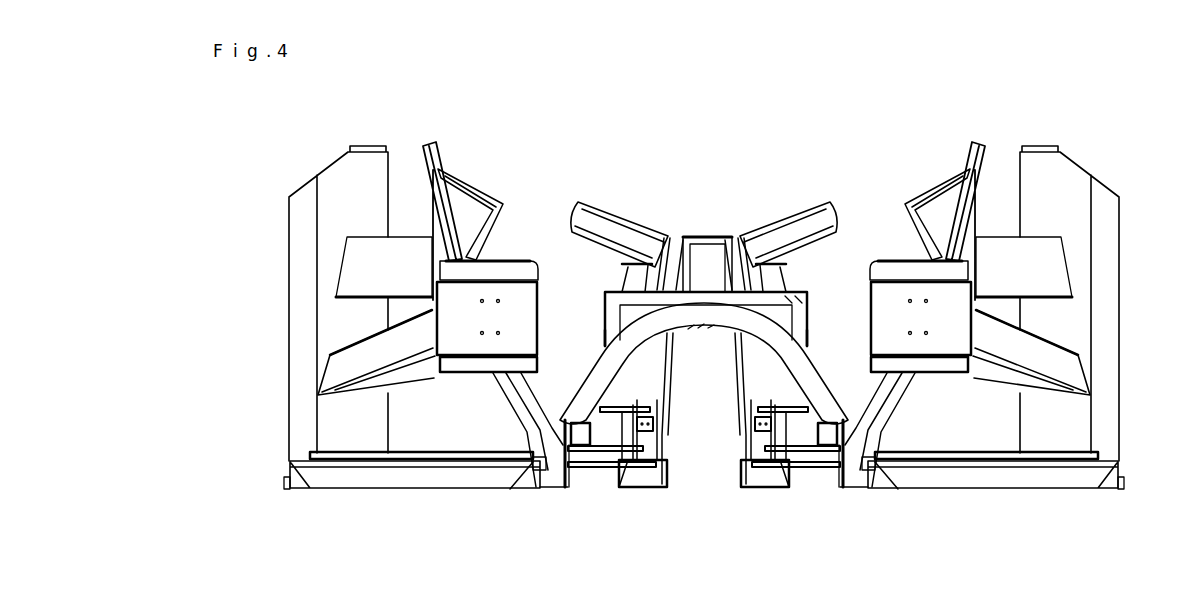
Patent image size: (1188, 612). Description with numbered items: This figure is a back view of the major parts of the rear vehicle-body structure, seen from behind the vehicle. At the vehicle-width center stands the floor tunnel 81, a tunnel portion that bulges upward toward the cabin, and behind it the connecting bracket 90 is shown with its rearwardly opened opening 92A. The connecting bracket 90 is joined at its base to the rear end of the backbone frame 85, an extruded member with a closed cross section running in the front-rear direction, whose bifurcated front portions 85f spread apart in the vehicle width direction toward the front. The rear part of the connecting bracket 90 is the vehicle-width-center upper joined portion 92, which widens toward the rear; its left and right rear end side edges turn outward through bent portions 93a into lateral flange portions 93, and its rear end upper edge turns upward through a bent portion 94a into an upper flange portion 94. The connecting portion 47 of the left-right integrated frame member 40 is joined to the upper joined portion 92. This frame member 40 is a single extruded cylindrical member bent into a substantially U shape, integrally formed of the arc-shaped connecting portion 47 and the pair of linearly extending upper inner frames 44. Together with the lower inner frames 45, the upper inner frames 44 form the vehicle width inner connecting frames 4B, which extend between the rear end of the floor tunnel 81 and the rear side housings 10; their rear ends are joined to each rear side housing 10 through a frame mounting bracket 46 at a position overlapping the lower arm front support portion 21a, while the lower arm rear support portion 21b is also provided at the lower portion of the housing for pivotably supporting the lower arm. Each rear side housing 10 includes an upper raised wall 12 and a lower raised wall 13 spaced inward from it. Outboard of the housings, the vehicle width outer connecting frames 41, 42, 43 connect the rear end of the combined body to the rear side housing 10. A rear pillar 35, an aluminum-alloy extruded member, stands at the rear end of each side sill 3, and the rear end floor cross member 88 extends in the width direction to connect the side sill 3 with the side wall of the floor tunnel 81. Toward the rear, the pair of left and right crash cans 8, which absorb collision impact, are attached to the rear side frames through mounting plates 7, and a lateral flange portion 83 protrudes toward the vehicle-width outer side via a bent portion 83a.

The side sill 3 is at (285, 488).
The mounting plate 7 is at (498, 260).
The crash can 8 is at (531, 277).
The rear side housing 10 is at (442, 166).
The upper raised wall 12 is at (428, 157).
The lower raised wall 13 is at (572, 491).
The lower arm front support portion 21a is at (531, 444).
The lower arm rear support portion 21b is at (529, 468).
The rear pillar 35 is at (344, 157).
The left-right integrated frame member 40 is at (720, 343).
The vehicle width outer connecting frame 41 is at (374, 236).
The vehicle width outer connecting frame 42 is at (360, 336).
The vehicle width outer connecting frame 43 is at (422, 490).
The upper inner frame 44 is at (590, 377).
The lower inner frame 45 is at (601, 494).
The frame mounting bracket 46 is at (623, 491).
The connecting portion 47 is at (699, 339).
The vehicle width inner connecting frame 4B is at (661, 406).
The floor tunnel 81 is at (580, 417).
The lateral flange portion 83 is at (655, 489).
The bent portion 83a is at (658, 438).
The backbone frame 85 is at (703, 233).
The bifurcated front portion 85f is at (614, 200).
The rear end floor cross member 88 is at (470, 447).
The connecting bracket 90 is at (689, 240).
The vehicle-width-center upper joined portion 92 is at (620, 277).
The opening 92A is at (793, 277).
The lateral flange portion 93 is at (605, 332).
The bent portion 93a is at (613, 307).
The upper flange portion 94 is at (667, 238).
The bent portion 94a is at (787, 233).